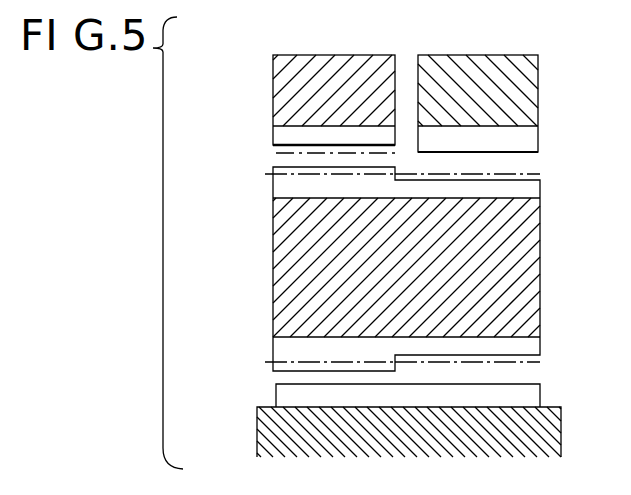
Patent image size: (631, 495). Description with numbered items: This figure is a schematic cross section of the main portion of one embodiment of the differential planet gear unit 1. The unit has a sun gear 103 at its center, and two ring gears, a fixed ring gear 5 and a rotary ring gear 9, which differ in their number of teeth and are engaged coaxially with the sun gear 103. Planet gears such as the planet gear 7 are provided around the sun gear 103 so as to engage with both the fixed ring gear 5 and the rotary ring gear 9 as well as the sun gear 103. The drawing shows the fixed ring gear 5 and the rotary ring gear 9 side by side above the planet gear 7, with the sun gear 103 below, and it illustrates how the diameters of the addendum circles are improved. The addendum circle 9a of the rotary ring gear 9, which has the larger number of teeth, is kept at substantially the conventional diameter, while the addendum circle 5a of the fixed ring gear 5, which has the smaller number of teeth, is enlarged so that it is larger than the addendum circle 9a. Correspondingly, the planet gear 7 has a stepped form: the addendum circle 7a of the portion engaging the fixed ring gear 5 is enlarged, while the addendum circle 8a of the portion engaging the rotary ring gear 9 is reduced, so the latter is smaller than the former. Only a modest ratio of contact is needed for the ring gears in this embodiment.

The differential planet gear unit 1 is at (240, 233).
The fixed ring gear 5 is at (279, 69).
The addendum circle of the fixed ring gear 5a is at (278, 147).
The planet gear 7 is at (528, 240).
The addendum circle of the planet gear engaging the fixed ring gear 7a is at (284, 168).
The addendum circle of the planet gear engaging the rotary ring gear 8a is at (528, 176).
The rotary ring gear 9 is at (522, 73).
The addendum circle of the rotary ring gear 9a is at (520, 155).
The sun gear 103 is at (547, 410).